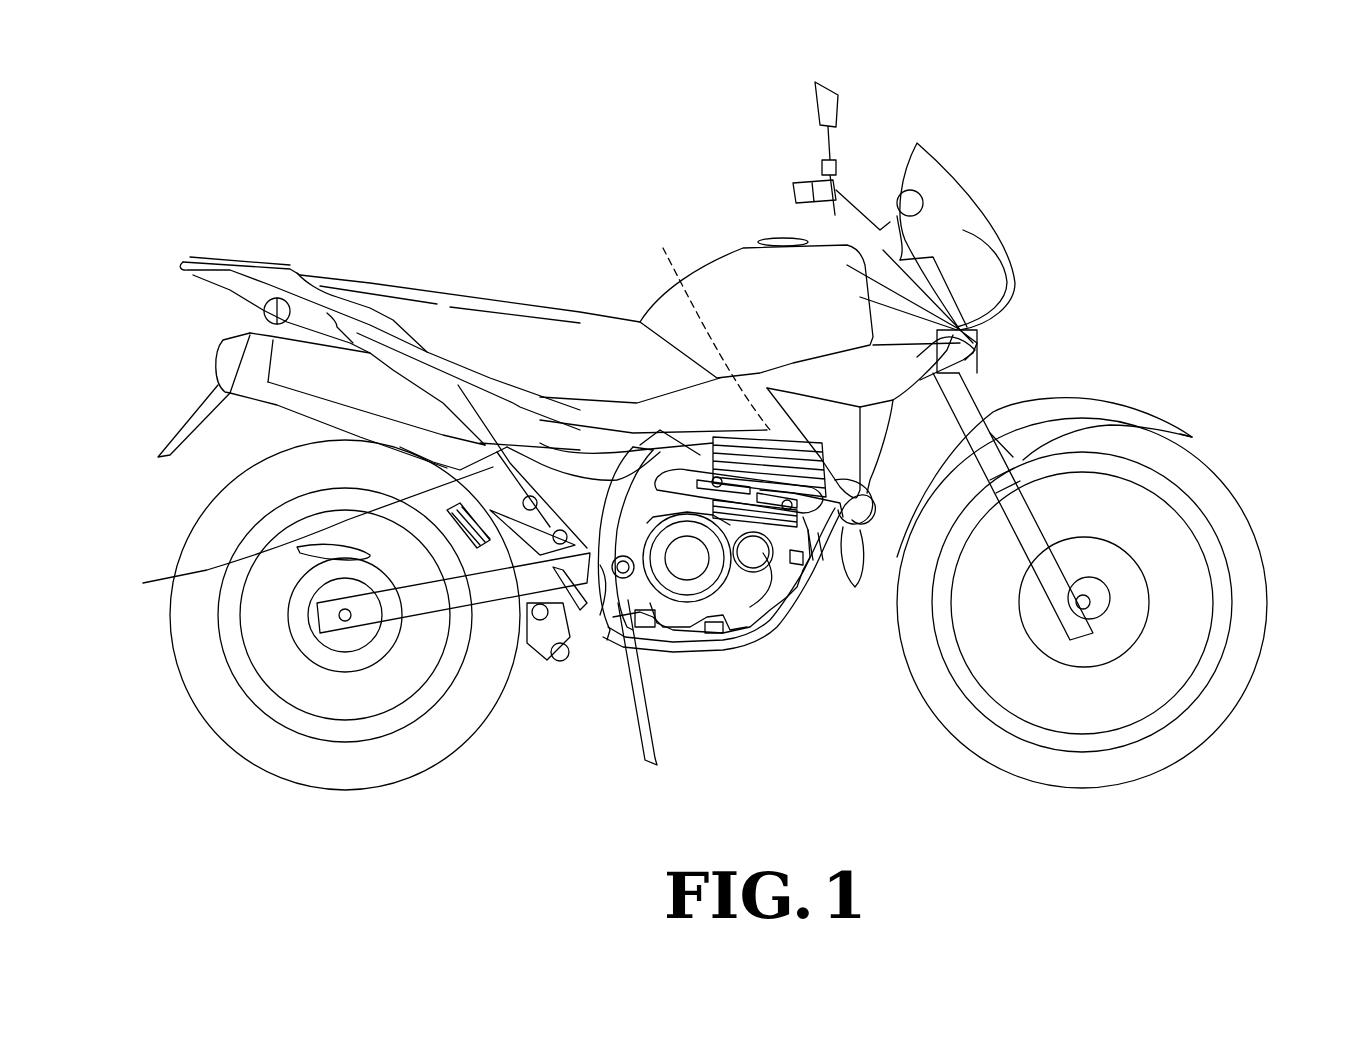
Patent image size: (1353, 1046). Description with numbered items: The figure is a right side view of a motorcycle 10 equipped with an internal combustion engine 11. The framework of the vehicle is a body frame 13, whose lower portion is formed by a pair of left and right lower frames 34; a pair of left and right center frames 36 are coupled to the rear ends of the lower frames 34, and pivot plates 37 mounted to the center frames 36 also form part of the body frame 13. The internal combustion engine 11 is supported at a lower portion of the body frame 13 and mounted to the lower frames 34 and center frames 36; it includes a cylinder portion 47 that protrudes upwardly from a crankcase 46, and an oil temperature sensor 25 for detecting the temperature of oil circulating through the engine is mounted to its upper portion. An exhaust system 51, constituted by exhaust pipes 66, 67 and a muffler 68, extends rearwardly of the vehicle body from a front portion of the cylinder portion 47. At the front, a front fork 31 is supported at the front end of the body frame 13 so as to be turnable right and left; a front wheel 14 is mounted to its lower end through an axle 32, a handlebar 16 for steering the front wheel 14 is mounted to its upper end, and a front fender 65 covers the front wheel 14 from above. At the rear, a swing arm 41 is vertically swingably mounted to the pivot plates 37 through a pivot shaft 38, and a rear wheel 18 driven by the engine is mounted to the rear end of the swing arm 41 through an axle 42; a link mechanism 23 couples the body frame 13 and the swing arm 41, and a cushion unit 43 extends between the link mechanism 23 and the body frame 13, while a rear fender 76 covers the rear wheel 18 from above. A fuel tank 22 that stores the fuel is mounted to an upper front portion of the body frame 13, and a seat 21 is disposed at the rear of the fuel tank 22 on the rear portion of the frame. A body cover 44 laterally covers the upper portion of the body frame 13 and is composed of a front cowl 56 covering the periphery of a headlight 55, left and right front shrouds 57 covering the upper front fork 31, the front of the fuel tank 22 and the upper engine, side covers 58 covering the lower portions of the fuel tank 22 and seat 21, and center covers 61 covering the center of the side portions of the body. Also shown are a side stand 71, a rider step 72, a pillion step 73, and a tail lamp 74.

The motorcycle 10 is at (1054, 195).
The internal combustion engine 11 is at (728, 592).
The body frame 13 is at (800, 635).
The front wheel 14 is at (1240, 700).
The handlebar 16 is at (793, 192).
The rear wheel 18 is at (218, 745).
The seat 21 is at (485, 306).
The fuel tank 22 is at (700, 266).
The link mechanism 23 is at (577, 668).
The oil temperature sensor 25 is at (662, 258).
The front fork 31 is at (990, 392).
The axle 32 is at (1110, 595).
The lower frames 34 is at (798, 605).
The center frames 36 is at (613, 604).
The pivot plates 37 is at (548, 636).
The pivot shaft 38 is at (640, 625).
The swing arm 41 is at (443, 600).
The axle 42 is at (345, 621).
The cushion unit 43 is at (560, 668).
The body cover 44 is at (1010, 330).
The crankcase 46 is at (712, 610).
The cylinder portion 47 is at (825, 457).
The exhaust system 51 is at (855, 585).
The headlight 55 is at (1005, 258).
The front cowl 56 is at (965, 196).
The front shrouds 57 is at (990, 351).
The side covers 58 is at (637, 423).
The center covers 61 is at (577, 490).
The front fender 65 is at (1130, 402).
The exhaust pipe 66 is at (852, 517).
The exhaust pipe 67 is at (856, 550).
The muffler 68 is at (278, 403).
The side stand 71 is at (628, 745).
The rider step 72 is at (665, 680).
The pillion step 73 is at (207, 570).
The tail lamp 74 is at (230, 300).
The rear fender 76 is at (192, 402).